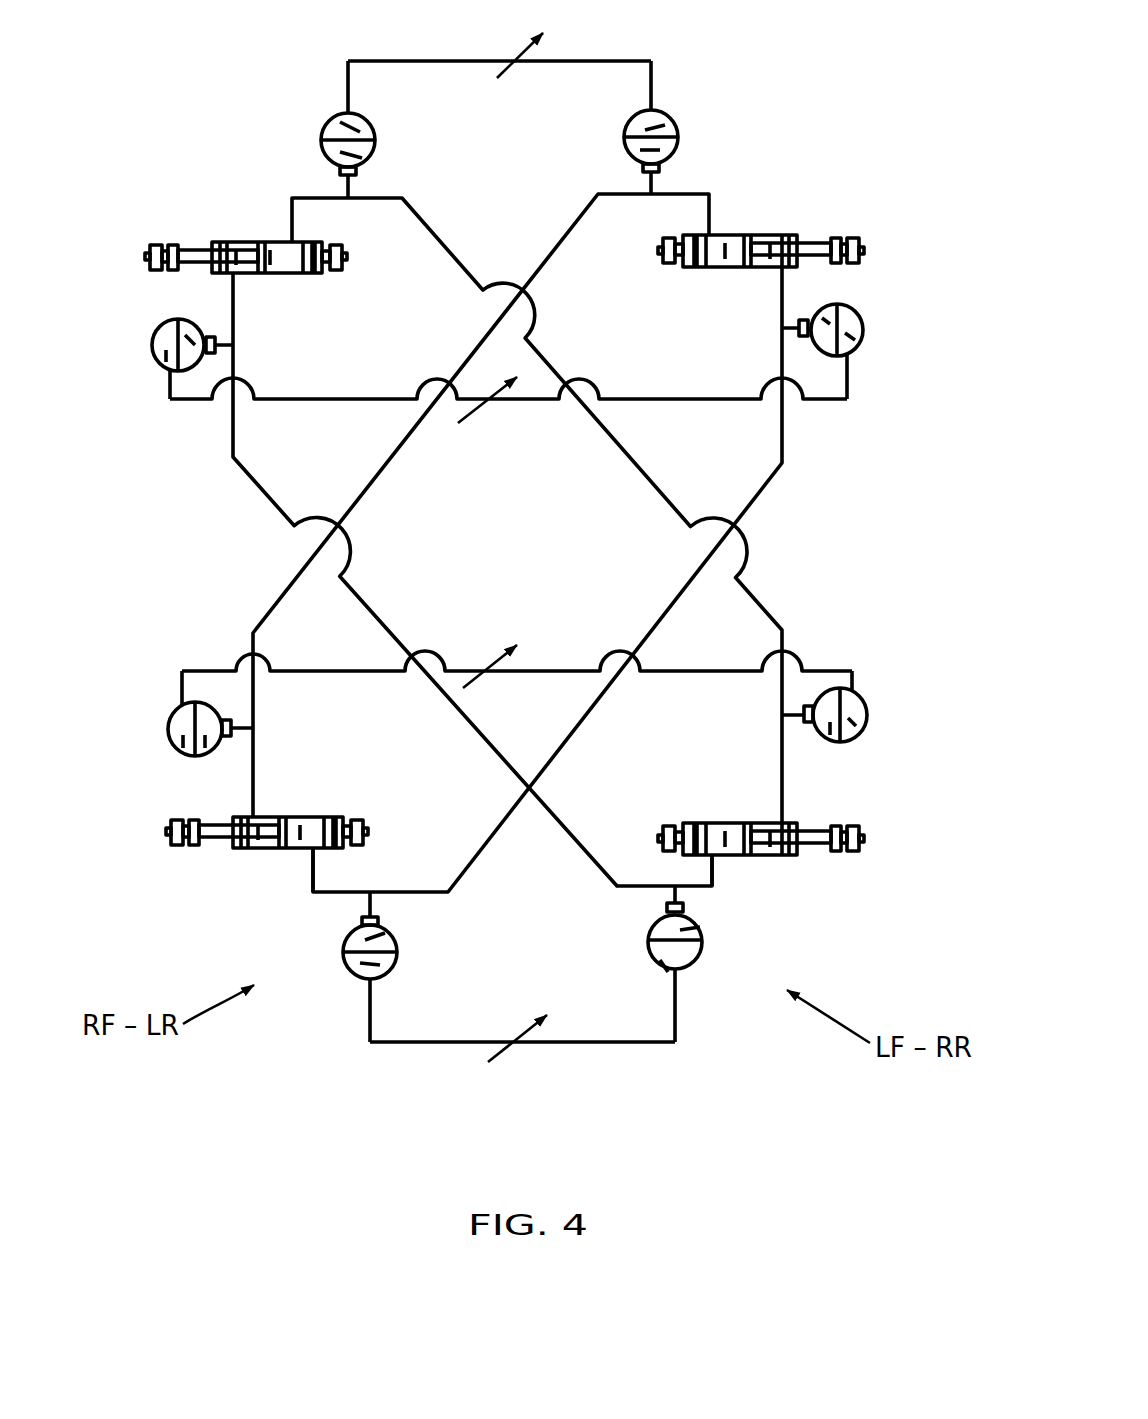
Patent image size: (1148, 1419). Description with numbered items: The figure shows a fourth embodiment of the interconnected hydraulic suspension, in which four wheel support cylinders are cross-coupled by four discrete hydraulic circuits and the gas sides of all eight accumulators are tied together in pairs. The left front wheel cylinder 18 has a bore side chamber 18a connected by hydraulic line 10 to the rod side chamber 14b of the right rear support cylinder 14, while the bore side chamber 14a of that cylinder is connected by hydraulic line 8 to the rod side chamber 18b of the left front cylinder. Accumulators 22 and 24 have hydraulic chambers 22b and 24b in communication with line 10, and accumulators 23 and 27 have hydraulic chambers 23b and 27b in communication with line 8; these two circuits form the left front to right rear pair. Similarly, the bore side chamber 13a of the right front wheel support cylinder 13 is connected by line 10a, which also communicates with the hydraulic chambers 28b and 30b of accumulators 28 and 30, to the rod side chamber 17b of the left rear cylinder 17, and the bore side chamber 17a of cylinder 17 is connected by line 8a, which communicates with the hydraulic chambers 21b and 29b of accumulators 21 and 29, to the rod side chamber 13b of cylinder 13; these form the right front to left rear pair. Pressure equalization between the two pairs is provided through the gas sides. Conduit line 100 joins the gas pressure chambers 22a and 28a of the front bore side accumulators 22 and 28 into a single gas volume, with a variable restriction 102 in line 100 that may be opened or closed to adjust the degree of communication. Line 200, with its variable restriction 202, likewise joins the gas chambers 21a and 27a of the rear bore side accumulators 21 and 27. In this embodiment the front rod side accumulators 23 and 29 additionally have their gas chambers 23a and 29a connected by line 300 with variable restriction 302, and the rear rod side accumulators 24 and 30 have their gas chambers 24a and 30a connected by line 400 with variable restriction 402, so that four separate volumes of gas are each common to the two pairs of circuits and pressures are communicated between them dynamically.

The hydraulic line 8 is at (233, 443).
The hydraulic line 8a is at (782, 445).
The hydraulic line 10 is at (440, 238).
The hydraulic line 10a is at (553, 248).
The right front wheel support cylinder 13 is at (720, 267).
The bore side chamber 13a is at (730, 235).
The rod side chamber 13b is at (787, 235).
The right rear support cylinder 14 is at (725, 855).
The bore side chamber 14a is at (720, 823).
The rod side chamber 14b is at (792, 823).
The left rear wheel support cylinder 17 is at (290, 848).
The bore side chamber 17a is at (308, 817).
The rod side chamber 17b is at (241, 817).
The left front wheel cylinder 18 is at (290, 273).
The bore side chamber 18a is at (280, 242).
The rod side chamber 18b is at (228, 242).
The accumulator 21 is at (343, 973).
The gas chamber 21a is at (380, 963).
The hydraulic chamber 21b is at (387, 932).
The accumulator 22 is at (327, 112).
The gas pressure chamber 22a is at (352, 128).
The hydraulic chamber 22b is at (352, 155).
The accumulator 23 is at (153, 338).
The gas chamber of accumulator 23 23a is at (167, 358).
The hydraulic chamber 23b is at (188, 342).
The accumulator 24 is at (853, 692).
The fluid chamber of accumulator 24 24a is at (853, 720).
The hydraulic chamber 24b is at (830, 732).
The accumulator 27 is at (708, 970).
The gas chamber 27a is at (663, 973).
The hydraulic chamber 27b is at (700, 927).
The accumulator 28 is at (680, 110).
The gas pressure chamber 28a is at (660, 128).
The hydraulic chamber 28b is at (655, 148).
The accumulator 29 is at (867, 318).
The gas chamber of accumulator 29 29a is at (848, 333).
The hydraulic chamber 29b is at (825, 310).
The accumulator 30 is at (172, 707).
The gas chamber of accumulator 30 30a is at (185, 740).
The hydraulic chamber 30b is at (205, 755).
The conduit line 100 is at (577, 58).
The variable restriction 102 is at (522, 57).
The line 200 is at (455, 1042).
The variable restriction 202 is at (510, 1042).
The line 300 is at (728, 402).
The variable restriction 302 is at (480, 412).
The line 400 is at (712, 673).
The variable restriction 402 is at (480, 680).